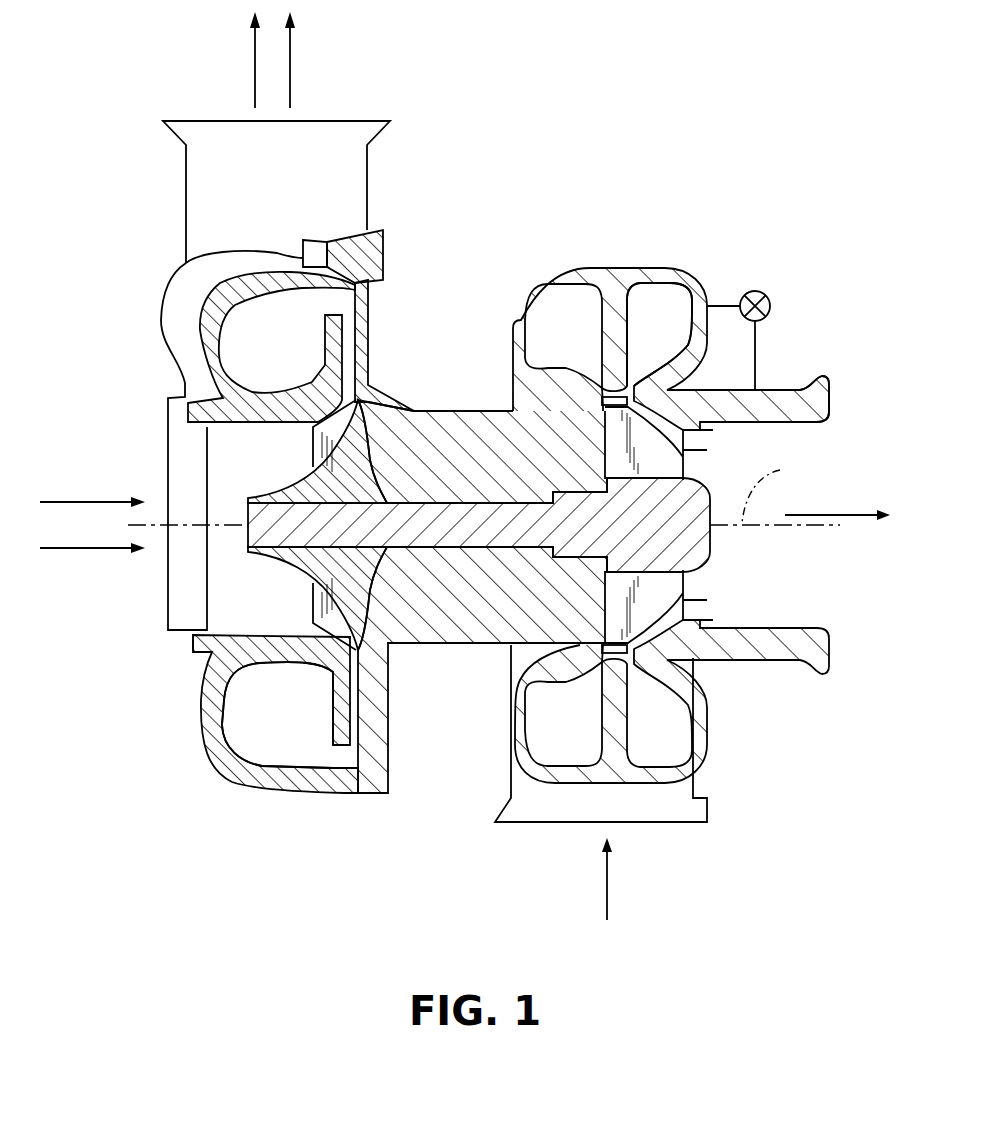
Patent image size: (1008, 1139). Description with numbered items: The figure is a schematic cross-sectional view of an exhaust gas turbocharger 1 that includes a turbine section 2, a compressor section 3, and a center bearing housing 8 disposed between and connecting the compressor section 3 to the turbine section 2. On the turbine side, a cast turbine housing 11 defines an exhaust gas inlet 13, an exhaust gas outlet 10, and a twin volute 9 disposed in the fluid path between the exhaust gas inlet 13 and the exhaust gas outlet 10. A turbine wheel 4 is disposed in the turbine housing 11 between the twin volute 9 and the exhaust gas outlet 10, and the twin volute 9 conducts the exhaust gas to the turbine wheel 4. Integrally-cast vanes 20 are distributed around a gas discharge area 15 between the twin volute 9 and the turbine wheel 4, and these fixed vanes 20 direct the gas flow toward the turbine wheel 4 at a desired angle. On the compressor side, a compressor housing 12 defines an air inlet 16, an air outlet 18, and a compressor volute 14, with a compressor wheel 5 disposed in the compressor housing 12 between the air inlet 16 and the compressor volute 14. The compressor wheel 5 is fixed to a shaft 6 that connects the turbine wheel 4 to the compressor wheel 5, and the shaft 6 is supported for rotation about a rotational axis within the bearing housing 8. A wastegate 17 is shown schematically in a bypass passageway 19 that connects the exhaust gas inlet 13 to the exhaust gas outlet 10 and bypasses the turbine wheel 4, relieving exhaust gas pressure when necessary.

The exhaust gas turbocharger 1 is at (508, 136).
The turbine section 2 is at (613, 240).
The compressor section 3 is at (139, 300).
The turbine wheel 4 is at (647, 535).
The compressor wheel 5 is at (400, 645).
The shaft 6 is at (493, 503).
The center bearing housing 8 is at (452, 411).
The twin volute 9 is at (655, 320).
The exhaust gas outlet 10 is at (797, 383).
The turbine housing 11 is at (703, 718).
The compressor housing 12 is at (223, 747).
The exhaust gas inlet 13 is at (680, 792).
The compressor volute 14 is at (292, 743).
The gas discharge area 15 is at (638, 418).
The air inlet 16 is at (209, 655).
The wastegate 17 is at (762, 292).
The air outlet 18 is at (207, 189).
The bypass passageway 19 is at (725, 303).
The integrally-cast vanes 20 is at (585, 375).